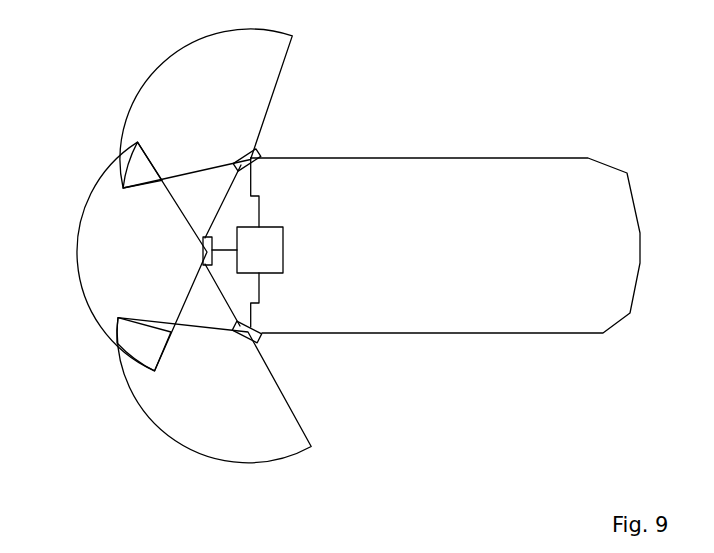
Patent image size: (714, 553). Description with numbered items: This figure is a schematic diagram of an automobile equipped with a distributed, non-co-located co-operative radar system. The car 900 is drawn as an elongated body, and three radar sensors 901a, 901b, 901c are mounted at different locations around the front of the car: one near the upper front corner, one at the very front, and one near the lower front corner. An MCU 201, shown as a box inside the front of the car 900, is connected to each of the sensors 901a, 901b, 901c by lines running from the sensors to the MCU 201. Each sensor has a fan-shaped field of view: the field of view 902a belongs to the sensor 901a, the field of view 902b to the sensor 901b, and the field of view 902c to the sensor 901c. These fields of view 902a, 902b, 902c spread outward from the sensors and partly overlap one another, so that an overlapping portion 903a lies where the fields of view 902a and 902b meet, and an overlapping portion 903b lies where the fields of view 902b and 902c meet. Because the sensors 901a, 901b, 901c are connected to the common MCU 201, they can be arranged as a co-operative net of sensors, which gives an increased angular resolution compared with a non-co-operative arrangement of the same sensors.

The car 900 is at (563, 152).
The MCU 201 is at (283, 243).
The radar sensor 901a is at (254, 158).
The radar sensor 901b is at (201, 254).
The radar sensor 901c is at (260, 340).
The field of view 902a is at (233, 108).
The field of view 902b is at (159, 266).
The field of view 902c is at (238, 414).
The overlapping portion 903a is at (133, 168).
The overlapping portion 903b is at (133, 338).